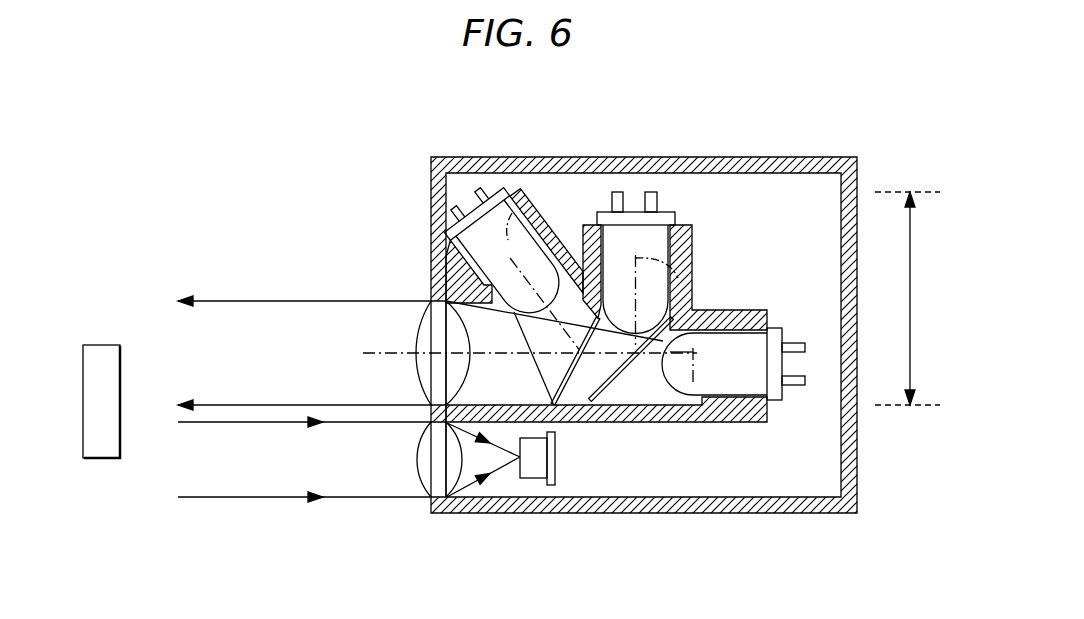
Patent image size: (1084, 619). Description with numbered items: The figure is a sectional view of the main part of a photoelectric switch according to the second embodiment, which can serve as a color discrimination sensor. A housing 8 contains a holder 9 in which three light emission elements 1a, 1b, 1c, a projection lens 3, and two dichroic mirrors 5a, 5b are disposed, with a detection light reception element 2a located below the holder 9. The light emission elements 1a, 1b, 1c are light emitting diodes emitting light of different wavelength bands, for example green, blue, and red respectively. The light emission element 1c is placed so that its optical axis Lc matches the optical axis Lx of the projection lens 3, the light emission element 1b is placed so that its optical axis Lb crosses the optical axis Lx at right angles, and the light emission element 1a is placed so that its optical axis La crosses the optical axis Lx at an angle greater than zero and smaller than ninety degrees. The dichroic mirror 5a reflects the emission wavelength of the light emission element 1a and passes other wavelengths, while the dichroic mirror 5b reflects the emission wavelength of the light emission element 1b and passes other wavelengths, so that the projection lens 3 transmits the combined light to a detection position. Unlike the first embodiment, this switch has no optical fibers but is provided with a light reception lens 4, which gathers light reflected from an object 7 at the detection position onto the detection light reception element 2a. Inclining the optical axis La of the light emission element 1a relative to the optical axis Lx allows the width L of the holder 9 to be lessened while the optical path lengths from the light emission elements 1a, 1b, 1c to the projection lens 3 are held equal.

The housing 8 is at (493, 157).
The light emission element 1a is at (508, 240).
The light emission element 1b is at (655, 250).
The light emission element 1c is at (758, 347).
The projection lens 3 is at (418, 332).
The light reception lens 4 is at (418, 462).
The object 7 is at (100, 343).
The detection light reception element 2a is at (538, 480).
The dichroic mirror 5a is at (556, 406).
The dichroic mirror 5b is at (625, 412).
The holder 9 is at (746, 422).
The optical axis La is at (565, 240).
The optical axis Lb is at (690, 277).
The optical axis Lc is at (683, 398).
The optical axis Lx is at (513, 355).
The width of the holder L is at (907, 298).